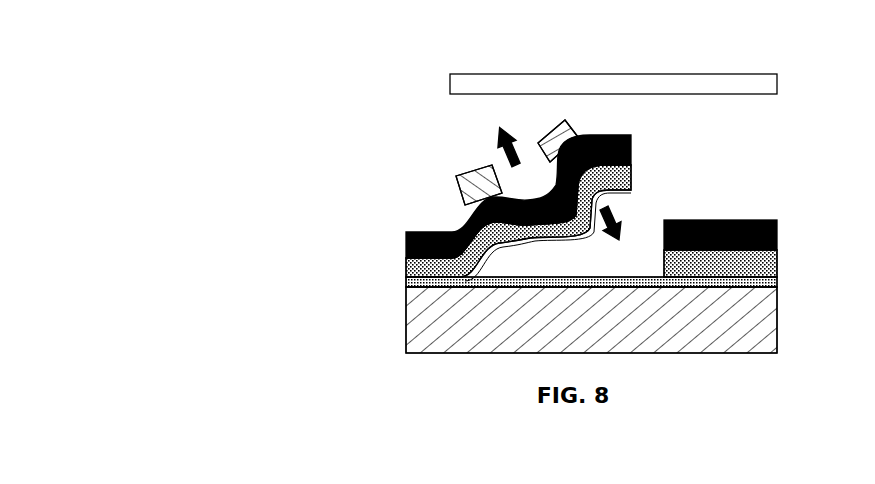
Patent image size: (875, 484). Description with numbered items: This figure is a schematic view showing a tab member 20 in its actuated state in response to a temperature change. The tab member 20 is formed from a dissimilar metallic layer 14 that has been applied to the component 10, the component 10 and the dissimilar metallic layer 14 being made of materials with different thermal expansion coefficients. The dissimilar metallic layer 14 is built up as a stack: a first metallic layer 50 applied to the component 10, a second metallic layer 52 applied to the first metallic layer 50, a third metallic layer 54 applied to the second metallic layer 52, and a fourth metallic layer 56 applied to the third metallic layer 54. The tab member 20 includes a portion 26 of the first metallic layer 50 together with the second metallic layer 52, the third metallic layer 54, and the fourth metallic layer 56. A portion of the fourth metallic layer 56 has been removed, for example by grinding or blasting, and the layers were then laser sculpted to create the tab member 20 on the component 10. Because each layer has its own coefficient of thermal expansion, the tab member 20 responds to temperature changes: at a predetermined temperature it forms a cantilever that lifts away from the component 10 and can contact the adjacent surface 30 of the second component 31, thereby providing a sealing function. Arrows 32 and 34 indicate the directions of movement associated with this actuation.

The component 10 is at (778, 325).
The dissimilar metallic layer 14 is at (390, 228).
The tab member 20 is at (633, 133).
The portion 26 is at (568, 245).
The adjacent surface 30 is at (748, 95).
The second component 31 is at (790, 76).
The direction of lift-off 32 is at (507, 135).
The direction of deposition 34 is at (620, 218).
The first metallic layer 50 is at (778, 277).
The second metallic layer 52 is at (778, 260).
The third metallic layer 54 is at (778, 227).
The fourth metallic layer 56 is at (578, 137).